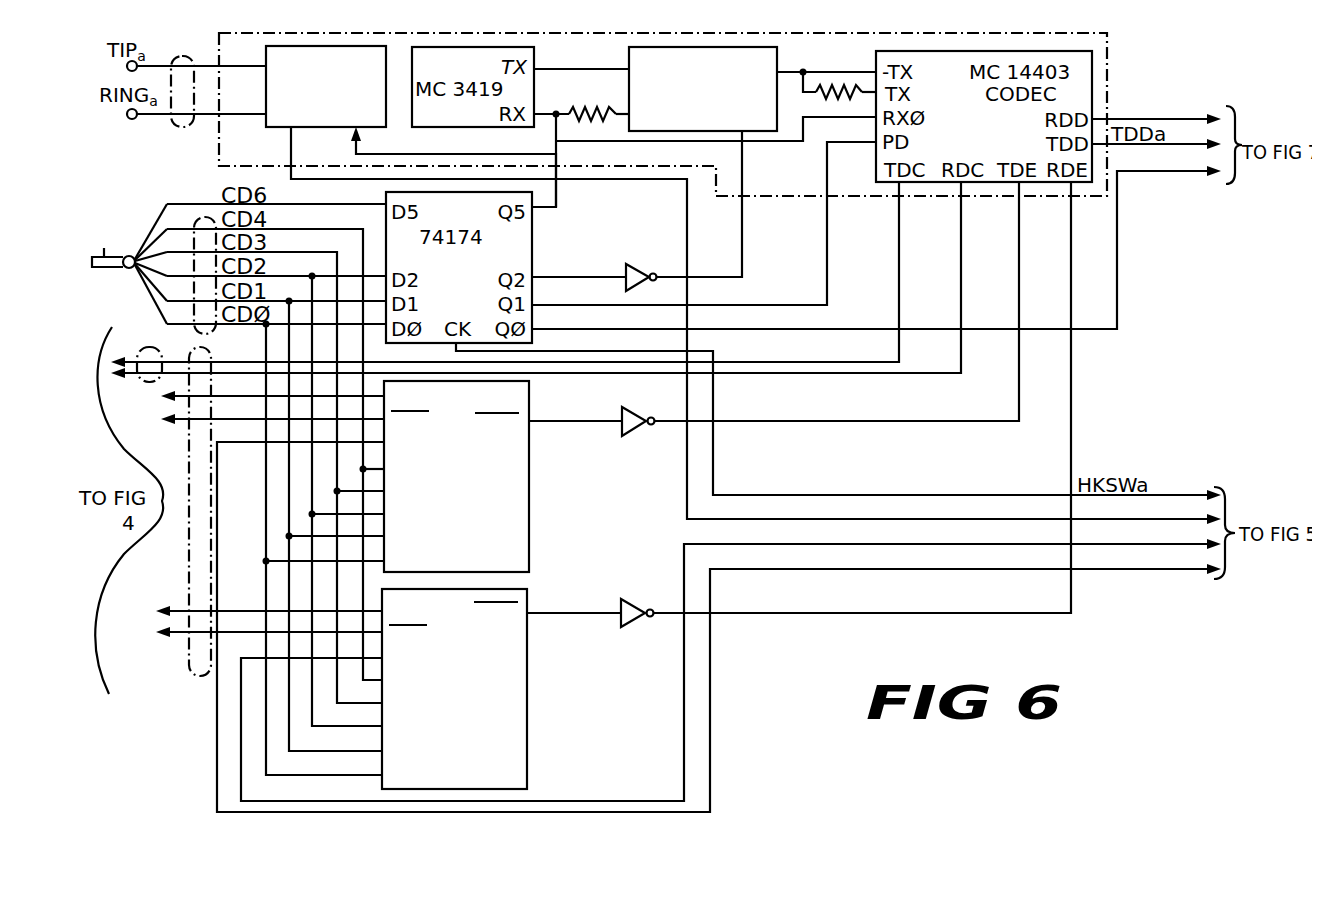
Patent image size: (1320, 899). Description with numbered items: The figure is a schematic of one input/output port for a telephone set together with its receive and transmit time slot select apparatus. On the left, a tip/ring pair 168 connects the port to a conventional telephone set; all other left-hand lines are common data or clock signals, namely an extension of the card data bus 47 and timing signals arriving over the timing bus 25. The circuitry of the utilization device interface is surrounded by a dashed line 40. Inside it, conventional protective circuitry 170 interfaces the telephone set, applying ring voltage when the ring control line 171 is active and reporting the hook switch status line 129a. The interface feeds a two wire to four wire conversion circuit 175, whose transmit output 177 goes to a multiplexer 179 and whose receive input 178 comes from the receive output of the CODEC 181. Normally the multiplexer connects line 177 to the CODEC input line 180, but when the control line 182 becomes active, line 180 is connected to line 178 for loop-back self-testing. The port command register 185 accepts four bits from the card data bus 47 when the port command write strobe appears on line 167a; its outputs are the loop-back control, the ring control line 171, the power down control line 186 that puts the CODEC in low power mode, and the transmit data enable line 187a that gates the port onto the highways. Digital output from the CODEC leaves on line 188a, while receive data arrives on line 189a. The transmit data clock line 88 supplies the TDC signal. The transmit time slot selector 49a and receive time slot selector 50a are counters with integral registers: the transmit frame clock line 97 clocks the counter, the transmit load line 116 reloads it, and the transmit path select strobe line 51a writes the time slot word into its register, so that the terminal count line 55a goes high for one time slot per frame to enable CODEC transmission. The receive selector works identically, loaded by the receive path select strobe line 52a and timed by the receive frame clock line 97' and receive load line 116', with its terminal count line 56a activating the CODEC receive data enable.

The utilization device interface 40 is at (1110, 80).
The tip/ring pair 168 is at (183, 131).
The protective circuitry 170 is at (296, 129).
The telephone line feed and two wire to four wire conversion circuit 175 is at (540, 68).
The transmit output 177 is at (571, 69).
The receive input 178 is at (582, 144).
The multiplexer 179 is at (629, 86).
The CODEC input line 180 is at (786, 52).
The CODEC 181 is at (870, 70).
The multiplexer control line 182 is at (742, 158).
The power down control line 186 is at (748, 306).
The receive data line 189a is at (1197, 117).
The transmit digital data line 188a is at (1117, 180).
The transmit data enable line 187a is at (825, 330).
The transmit data clock line 88 is at (166, 349).
The transmit terminal count line 55a is at (832, 423).
The receive terminal count line 56a is at (846, 614).
The ring control line 171 is at (565, 204).
The hook switch status line 129a is at (300, 181).
The port command write strobe line 167a is at (1076, 524).
The receive path select strobe line 52a is at (1076, 551).
The transmit path select strobe line 51a is at (1076, 576).
The port command register 185 is at (536, 268).
The card data bus 47 is at (217, 334).
The transmit frame clock line 97 is at (254, 391).
The transmit load line 116 is at (272, 420).
The receive frame clock line 97' is at (266, 597).
The receive load line 116' is at (260, 638).
The timing bus 25 is at (200, 678).
The transmit time slot selector 49a is at (530, 505).
The receive time slot selector 50a is at (530, 592).